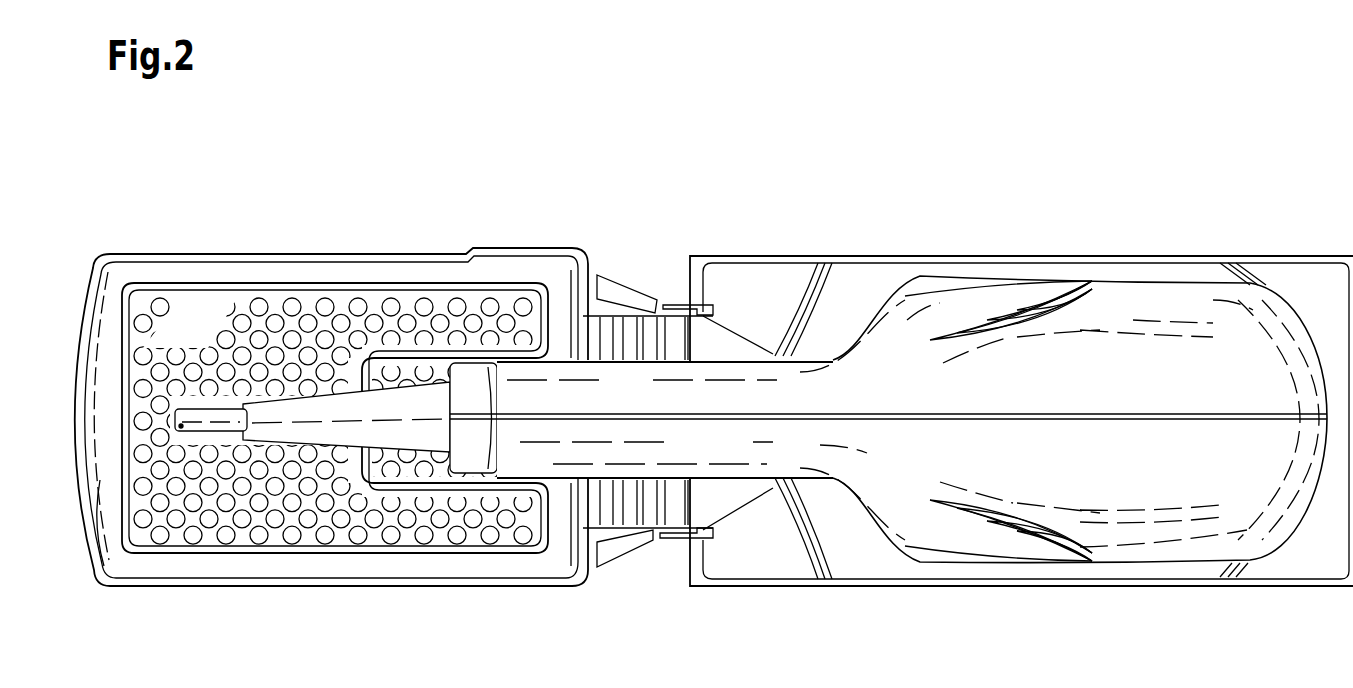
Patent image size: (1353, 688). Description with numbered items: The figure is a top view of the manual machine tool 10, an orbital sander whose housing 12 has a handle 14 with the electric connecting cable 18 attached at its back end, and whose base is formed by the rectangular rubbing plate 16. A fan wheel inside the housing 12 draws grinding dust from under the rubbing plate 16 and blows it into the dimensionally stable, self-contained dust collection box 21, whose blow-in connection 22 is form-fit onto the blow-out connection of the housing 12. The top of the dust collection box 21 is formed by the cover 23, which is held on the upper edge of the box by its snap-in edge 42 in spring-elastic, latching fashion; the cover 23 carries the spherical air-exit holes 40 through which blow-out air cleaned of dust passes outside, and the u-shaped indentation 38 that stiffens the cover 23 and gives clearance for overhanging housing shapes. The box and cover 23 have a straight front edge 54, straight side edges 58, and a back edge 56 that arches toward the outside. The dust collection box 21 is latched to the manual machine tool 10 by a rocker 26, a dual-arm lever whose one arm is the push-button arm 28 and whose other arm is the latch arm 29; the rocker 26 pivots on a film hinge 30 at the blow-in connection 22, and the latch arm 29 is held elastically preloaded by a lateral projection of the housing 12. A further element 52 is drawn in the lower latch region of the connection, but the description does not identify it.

The manual machine tool 10 is at (1160, 208).
The housing 12 is at (1180, 492).
The handle 14 is at (777, 457).
The rubbing plate 16 is at (1084, 596).
The electric connecting cable 18 is at (278, 425).
The dust collection box 21 is at (280, 241).
The blow-in connection 22 is at (632, 320).
The cover 23 is at (188, 268).
The rocker 26 is at (648, 560).
The push-button arm 28 is at (605, 275).
The latch arm 29 is at (715, 304).
The film hinge 30 is at (662, 537).
The indentation 38 is at (413, 468).
The air-exit holes 40 is at (193, 540).
The snap-in edge 42 is at (83, 533).
The lower latch wedge 52 is at (613, 508).
The front edge 54 is at (628, 327).
The back edge 56 is at (83, 312).
The side edges 58 is at (413, 250).